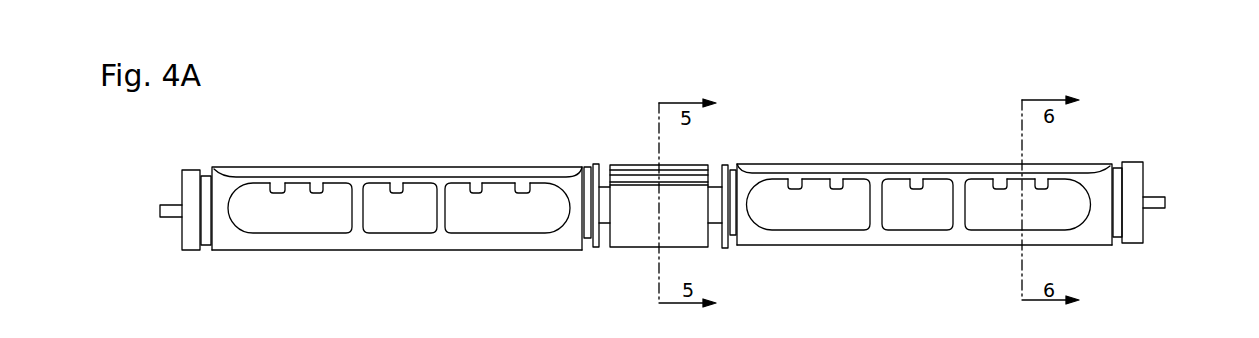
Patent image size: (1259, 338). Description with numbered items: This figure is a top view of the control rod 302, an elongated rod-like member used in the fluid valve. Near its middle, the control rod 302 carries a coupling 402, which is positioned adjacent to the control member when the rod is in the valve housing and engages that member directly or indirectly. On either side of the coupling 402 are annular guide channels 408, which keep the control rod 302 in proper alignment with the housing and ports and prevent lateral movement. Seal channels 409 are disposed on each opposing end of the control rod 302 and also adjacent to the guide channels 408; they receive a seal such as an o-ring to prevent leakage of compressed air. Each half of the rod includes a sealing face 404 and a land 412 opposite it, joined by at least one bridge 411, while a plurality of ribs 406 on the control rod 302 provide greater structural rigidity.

The control rod 302 is at (1115, 125).
The coupling 402 is at (637, 165).
The sealing face 404 is at (313, 167).
The ribs 406 is at (317, 193).
The annular guide channels 408 is at (607, 188).
The seal channels 409 is at (732, 168).
The bridge 411 is at (365, 203).
The land 412 is at (367, 250).